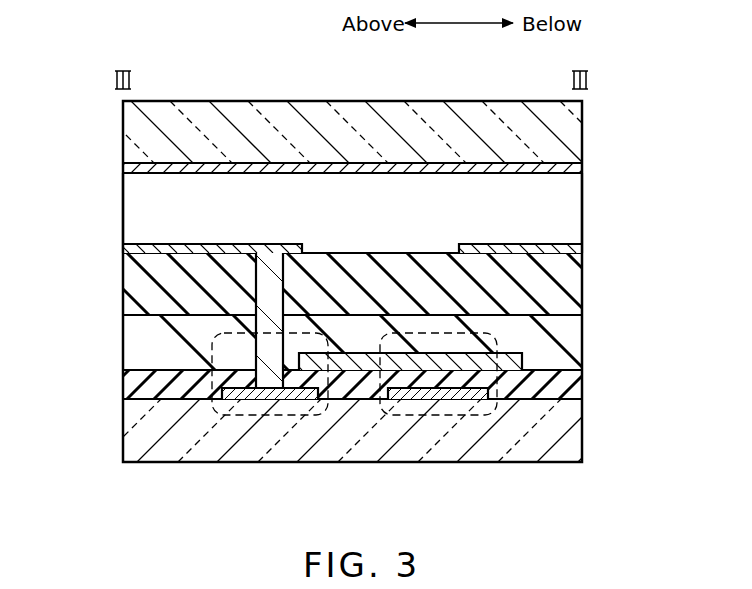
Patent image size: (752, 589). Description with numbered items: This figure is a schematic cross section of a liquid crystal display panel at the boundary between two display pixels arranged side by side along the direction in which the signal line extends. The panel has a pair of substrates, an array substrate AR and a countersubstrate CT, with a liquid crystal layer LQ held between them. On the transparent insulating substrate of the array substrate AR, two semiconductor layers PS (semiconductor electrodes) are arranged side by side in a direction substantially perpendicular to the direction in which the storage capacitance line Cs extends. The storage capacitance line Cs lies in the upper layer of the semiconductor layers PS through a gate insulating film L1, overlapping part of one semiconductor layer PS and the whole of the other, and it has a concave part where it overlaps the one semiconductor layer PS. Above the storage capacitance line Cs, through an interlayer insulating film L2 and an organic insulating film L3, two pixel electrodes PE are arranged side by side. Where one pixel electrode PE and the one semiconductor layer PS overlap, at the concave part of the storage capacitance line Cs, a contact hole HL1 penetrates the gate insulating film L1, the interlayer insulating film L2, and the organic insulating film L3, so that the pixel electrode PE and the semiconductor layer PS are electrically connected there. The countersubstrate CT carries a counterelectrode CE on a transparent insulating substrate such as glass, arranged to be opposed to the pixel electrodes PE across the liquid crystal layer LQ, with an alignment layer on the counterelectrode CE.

The countersubstrate CT is at (590, 101).
The counterelectrode CE is at (123, 171).
The liquid crystal layer LQ is at (575, 203).
The pixel electrode PE is at (608, 233).
The contact hole HL1 is at (265, 252).
The organic insulating film L3 is at (123, 285).
The interlayer insulating film L2 is at (123, 342).
The gate insulating film L1 is at (123, 385).
The storage capacitance line Cs is at (516, 352).
The semiconductor layer PS is at (438, 399).
The array substrate AR is at (590, 243).